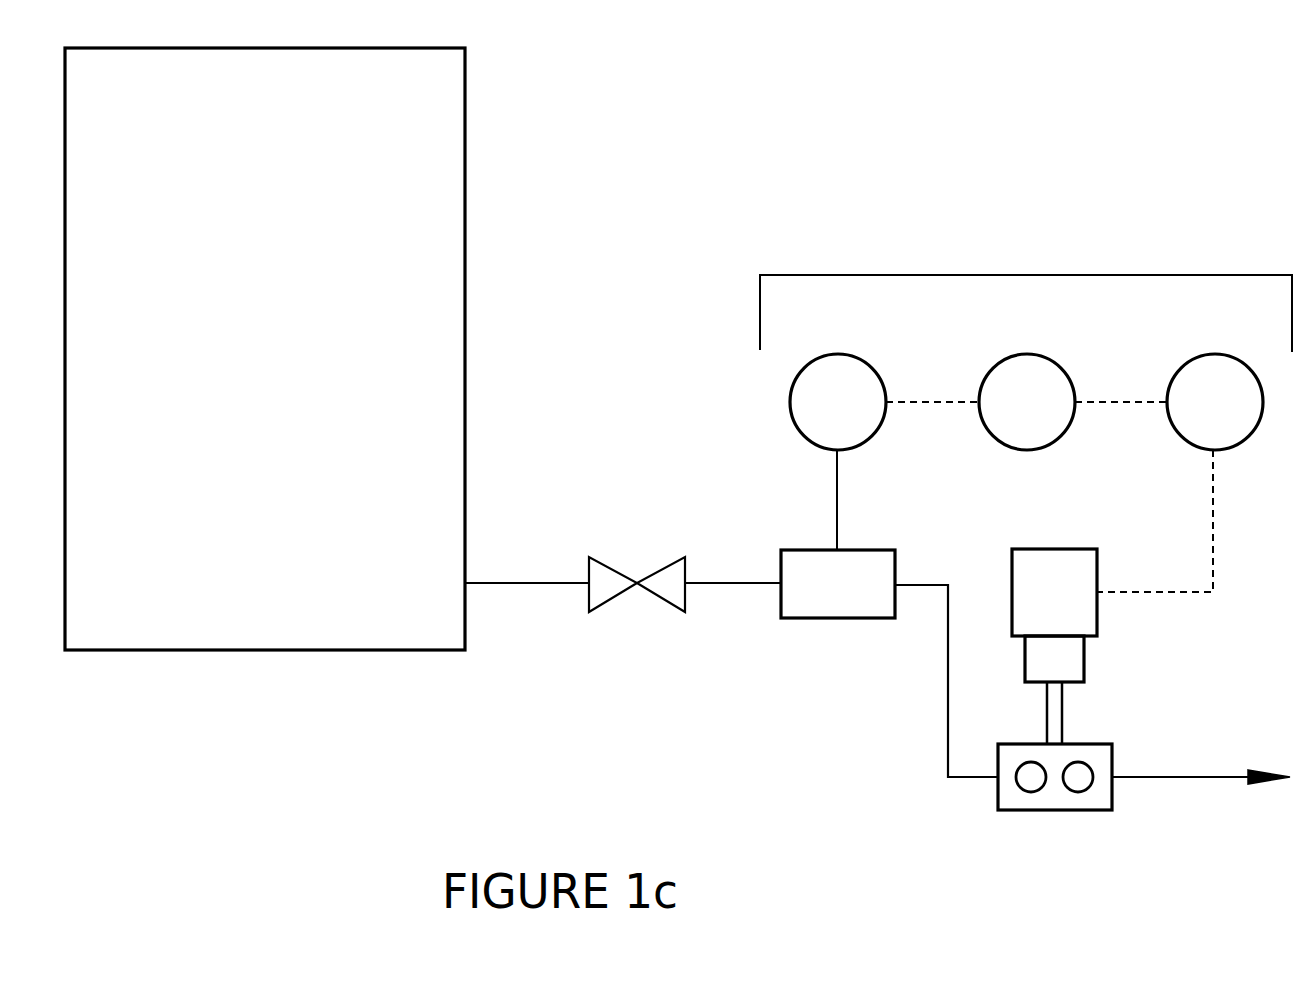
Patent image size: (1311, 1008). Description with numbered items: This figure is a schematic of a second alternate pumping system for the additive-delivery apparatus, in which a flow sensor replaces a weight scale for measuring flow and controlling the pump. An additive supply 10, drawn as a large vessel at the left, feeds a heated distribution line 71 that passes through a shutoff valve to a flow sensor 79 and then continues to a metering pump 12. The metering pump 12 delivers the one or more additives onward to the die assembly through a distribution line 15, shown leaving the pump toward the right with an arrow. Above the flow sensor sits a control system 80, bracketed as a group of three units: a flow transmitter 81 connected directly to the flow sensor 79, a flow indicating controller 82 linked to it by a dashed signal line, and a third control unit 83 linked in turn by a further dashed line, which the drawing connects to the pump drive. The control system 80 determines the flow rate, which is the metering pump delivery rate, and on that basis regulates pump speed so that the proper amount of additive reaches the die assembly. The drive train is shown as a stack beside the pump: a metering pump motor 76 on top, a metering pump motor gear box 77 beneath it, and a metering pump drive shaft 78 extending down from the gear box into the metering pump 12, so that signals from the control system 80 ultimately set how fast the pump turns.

The additive supply 10 is at (465, 358).
The heated distribution line 71 is at (527, 583).
The flow sensor 79 is at (812, 618).
The control system 80 is at (1026, 322).
The flow transmitter 81 is at (838, 353).
The flow indicating controller 82 is at (1025, 354).
The controller output 83 is at (1213, 355).
The metering pump motor 76 is at (1097, 615).
The metering pump motor gear box 77 is at (1084, 665).
The metering pump drive shaft 78 is at (1062, 713).
The metering pump 12 is at (1053, 810).
The distribution line 15 is at (1200, 777).